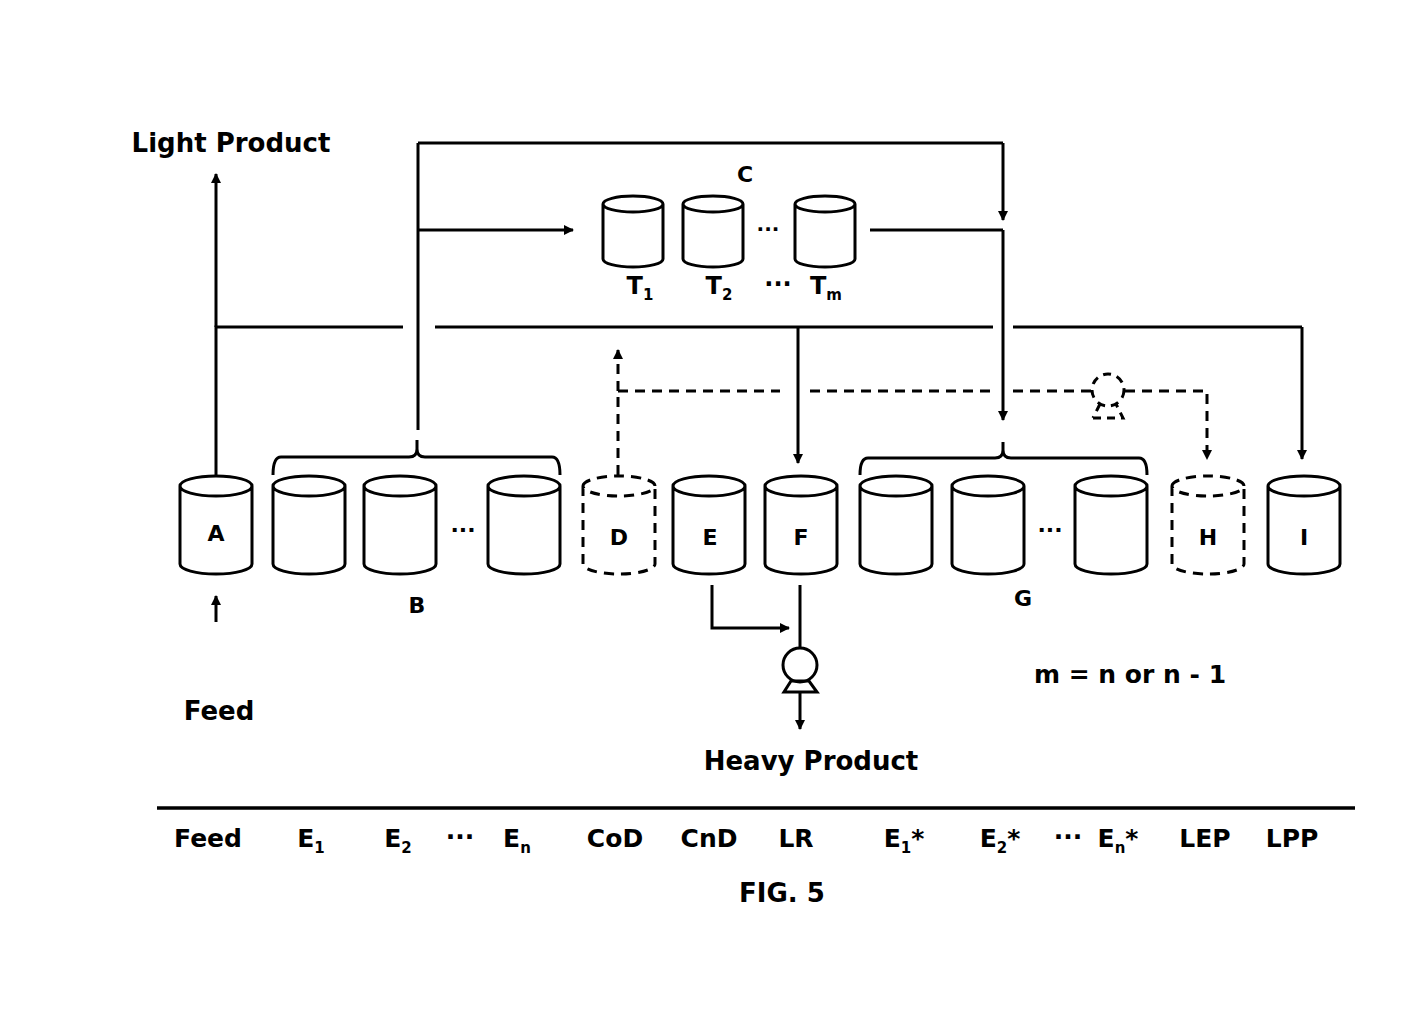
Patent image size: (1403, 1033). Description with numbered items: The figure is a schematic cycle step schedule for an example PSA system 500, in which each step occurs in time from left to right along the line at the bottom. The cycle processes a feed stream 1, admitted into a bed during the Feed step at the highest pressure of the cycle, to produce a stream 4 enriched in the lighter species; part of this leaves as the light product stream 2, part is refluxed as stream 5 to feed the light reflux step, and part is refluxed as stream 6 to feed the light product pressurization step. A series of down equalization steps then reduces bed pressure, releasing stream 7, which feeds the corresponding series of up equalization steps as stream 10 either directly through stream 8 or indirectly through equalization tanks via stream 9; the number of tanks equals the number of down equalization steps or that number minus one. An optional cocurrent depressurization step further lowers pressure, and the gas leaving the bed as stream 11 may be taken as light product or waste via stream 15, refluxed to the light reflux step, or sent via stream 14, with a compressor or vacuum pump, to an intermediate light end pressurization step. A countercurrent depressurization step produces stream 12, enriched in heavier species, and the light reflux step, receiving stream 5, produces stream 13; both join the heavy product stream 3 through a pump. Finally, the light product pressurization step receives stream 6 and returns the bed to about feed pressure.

The PSA system 500 is at (870, 95).
The feed stream 1 is at (233, 624).
The light product stream 2 is at (229, 250).
The heavy product stream 3 is at (812, 713).
The stream enriched in the lighter species 4 is at (759, 401).
The light reflux stream 5 is at (811, 395).
The light product pressurization stream 6 is at (1314, 393).
The down equalization stream 7 is at (429, 286).
The direct equalization stream 8 is at (749, 181).
The equalization tank stream 9 is at (710, 252).
The up equalization stream 10 is at (976, 337).
The cocurrent depressurization gas stream 11 is at (640, 433).
The countercurrent depressurization stream 12 is at (750, 606).
The light reflux effluent stream 13 is at (811, 638).
The light end pressurization stream 14 is at (1149, 404).
The light product or waste stream 15 is at (854, 370).